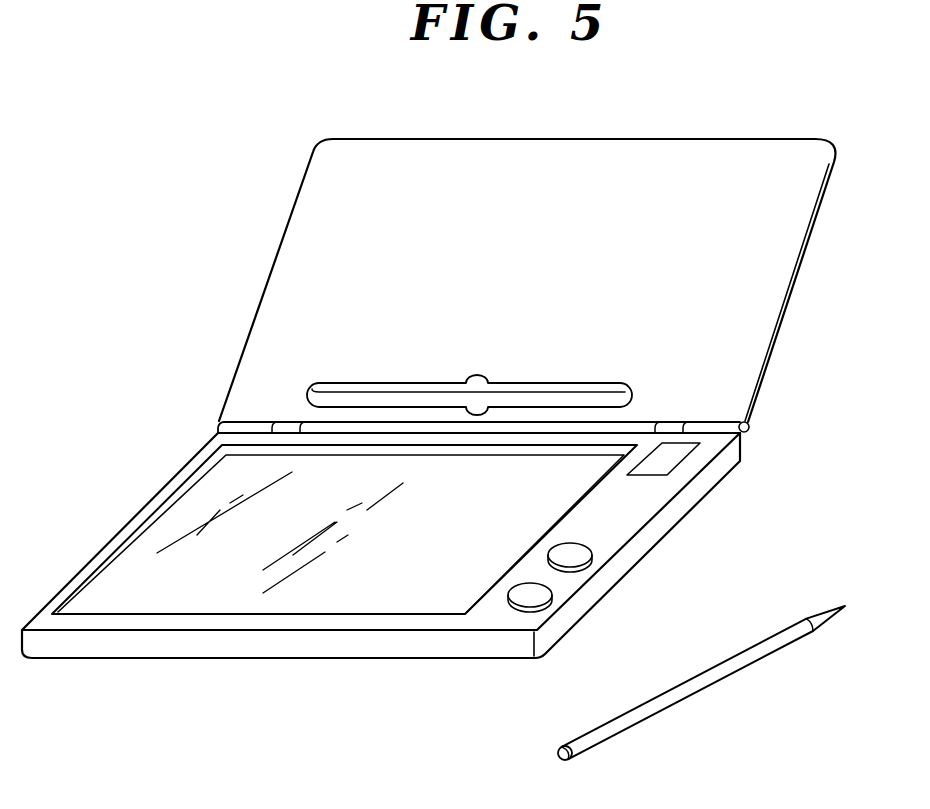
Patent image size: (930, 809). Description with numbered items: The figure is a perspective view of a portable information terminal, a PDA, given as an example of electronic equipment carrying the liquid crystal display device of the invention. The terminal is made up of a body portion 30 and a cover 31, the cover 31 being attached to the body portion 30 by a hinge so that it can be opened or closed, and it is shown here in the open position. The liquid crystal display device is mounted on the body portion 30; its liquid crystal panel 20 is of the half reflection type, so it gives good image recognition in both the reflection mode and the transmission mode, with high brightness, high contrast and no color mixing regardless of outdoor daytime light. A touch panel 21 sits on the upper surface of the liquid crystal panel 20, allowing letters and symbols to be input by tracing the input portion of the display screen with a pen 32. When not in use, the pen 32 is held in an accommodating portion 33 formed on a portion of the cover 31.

The liquid crystal panel 20 is at (378, 602).
The touch panel 21 is at (341, 605).
The body portion 30 is at (685, 514).
The cover 31 is at (782, 334).
The pen 32 is at (688, 678).
The accommodating portion 33 is at (392, 381).